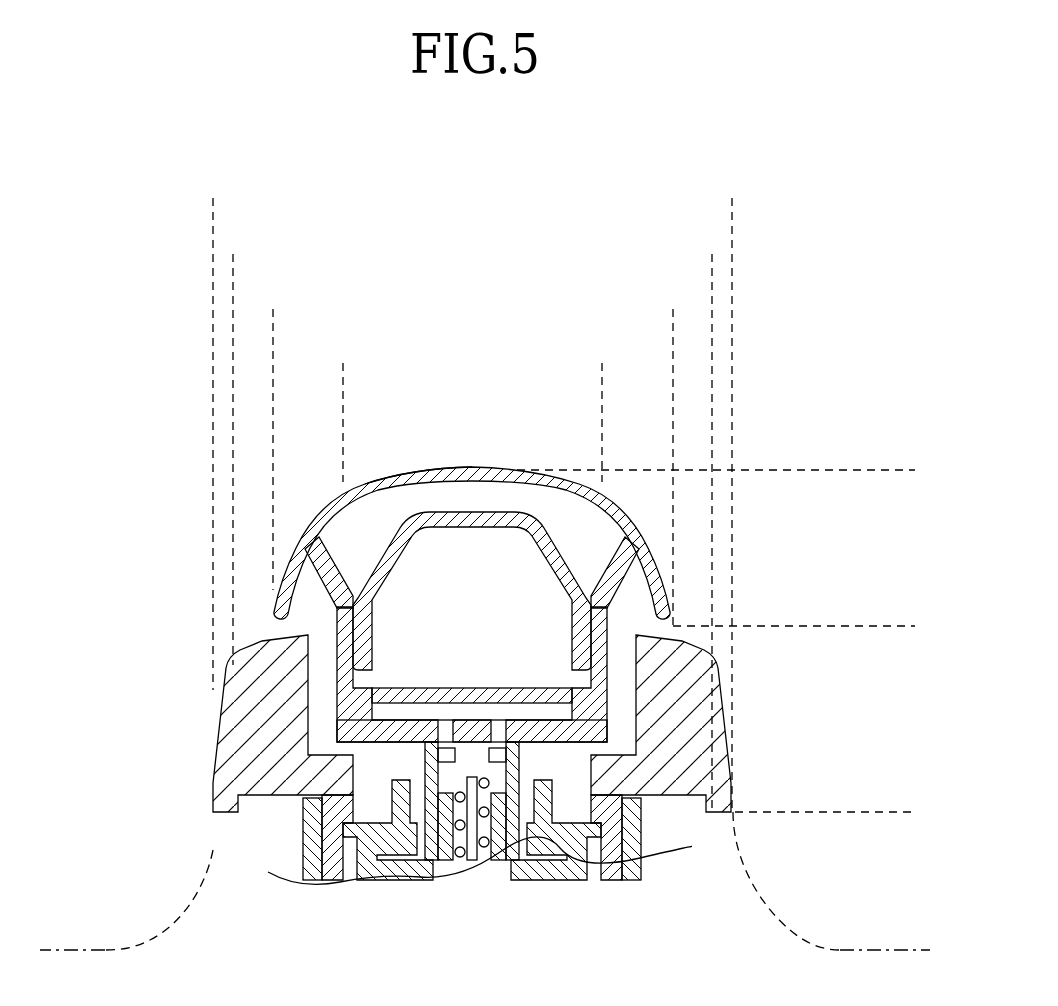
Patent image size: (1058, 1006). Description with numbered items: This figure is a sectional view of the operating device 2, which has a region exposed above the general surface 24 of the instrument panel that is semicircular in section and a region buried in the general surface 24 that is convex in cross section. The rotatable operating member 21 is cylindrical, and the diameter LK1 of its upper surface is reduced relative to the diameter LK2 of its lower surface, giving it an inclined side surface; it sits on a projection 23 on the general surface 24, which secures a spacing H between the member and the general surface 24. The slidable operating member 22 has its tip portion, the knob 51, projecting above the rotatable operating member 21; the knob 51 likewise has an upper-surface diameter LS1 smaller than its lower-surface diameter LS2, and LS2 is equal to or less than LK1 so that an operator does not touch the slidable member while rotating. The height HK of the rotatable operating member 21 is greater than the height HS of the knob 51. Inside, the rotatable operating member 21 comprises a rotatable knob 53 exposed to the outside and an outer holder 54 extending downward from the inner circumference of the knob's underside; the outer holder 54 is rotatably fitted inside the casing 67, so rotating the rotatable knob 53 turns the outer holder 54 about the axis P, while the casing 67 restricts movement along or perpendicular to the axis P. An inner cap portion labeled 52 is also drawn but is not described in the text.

The operating device 2 is at (718, 590).
The rotatable operating member 21 is at (220, 706).
The slidable operating member 22 is at (622, 497).
The projection 23 is at (772, 916).
The general surface 24 is at (897, 951).
The knob 51 is at (372, 476).
The inner cap 52 is at (495, 511).
The rotatable knob 53 is at (655, 625).
The outer holder 54 is at (322, 863).
The casing 67 is at (303, 837).
The axis P is at (473, 403).
The diameter of upper surface of rotatable operating member LK1 is at (712, 262).
The diameter of lower surface of rotatable operating member LK2 is at (732, 206).
The diameter of upper surface of knob LS1 is at (602, 371).
The diameter of lower surface of knob LS2 is at (673, 317).
The height of knob HS is at (909, 470).
The height of rotatable operating member HK is at (909, 626).
The spacing dimension H is at (909, 812).